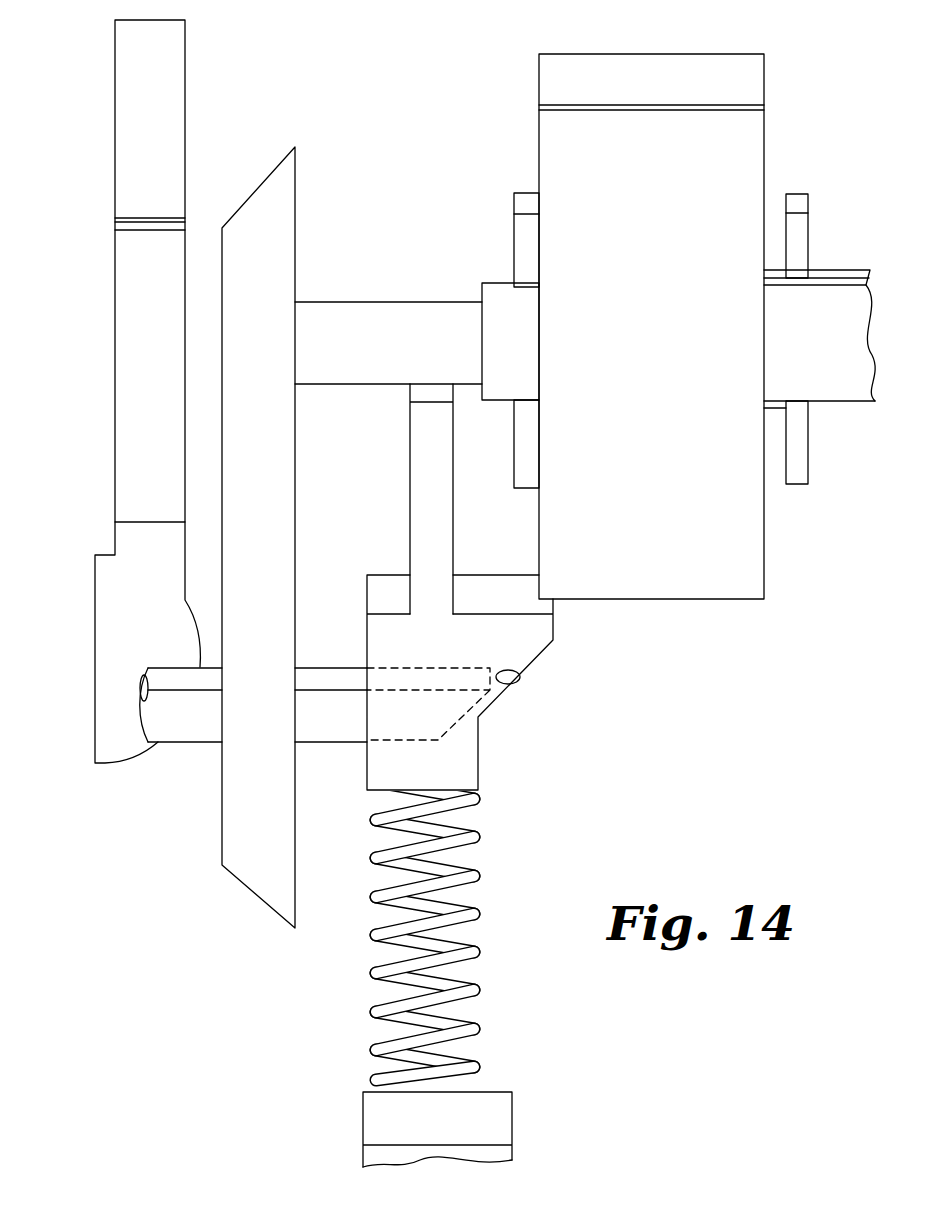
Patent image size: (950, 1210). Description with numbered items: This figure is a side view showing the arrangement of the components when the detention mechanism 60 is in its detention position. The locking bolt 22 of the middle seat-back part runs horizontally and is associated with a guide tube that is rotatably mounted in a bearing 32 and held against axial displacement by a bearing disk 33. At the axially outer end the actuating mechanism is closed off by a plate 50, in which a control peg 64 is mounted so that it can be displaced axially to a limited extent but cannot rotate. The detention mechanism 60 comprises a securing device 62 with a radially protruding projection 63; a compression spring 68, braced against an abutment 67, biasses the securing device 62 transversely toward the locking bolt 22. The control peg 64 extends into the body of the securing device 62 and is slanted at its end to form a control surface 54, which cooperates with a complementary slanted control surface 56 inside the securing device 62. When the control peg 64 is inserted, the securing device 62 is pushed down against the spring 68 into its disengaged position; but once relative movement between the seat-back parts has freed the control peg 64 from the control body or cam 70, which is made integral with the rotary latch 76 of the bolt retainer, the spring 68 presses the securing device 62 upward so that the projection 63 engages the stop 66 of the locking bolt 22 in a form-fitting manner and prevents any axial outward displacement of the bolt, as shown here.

The locking bolt 22 is at (417, 323).
The bearing 32 is at (670, 362).
The bearing disk 33 is at (800, 193).
The plate 50 is at (268, 243).
The control surface 54 is at (478, 727).
The control surface 56 is at (520, 686).
The detention mechanism 60 is at (438, 270).
The securing device 62 is at (540, 636).
The projection 63 is at (432, 492).
The control peg 64 is at (190, 723).
The stop 66 is at (481, 298).
The abutment 67 is at (493, 1125).
The compression spring 68 is at (378, 982).
The control body or cam 70 is at (108, 718).
The rotary latch 76 is at (170, 74).